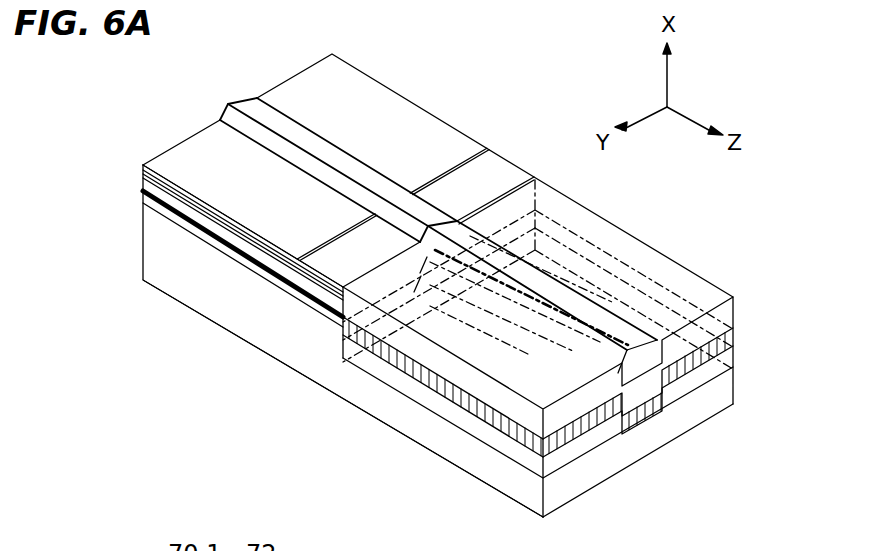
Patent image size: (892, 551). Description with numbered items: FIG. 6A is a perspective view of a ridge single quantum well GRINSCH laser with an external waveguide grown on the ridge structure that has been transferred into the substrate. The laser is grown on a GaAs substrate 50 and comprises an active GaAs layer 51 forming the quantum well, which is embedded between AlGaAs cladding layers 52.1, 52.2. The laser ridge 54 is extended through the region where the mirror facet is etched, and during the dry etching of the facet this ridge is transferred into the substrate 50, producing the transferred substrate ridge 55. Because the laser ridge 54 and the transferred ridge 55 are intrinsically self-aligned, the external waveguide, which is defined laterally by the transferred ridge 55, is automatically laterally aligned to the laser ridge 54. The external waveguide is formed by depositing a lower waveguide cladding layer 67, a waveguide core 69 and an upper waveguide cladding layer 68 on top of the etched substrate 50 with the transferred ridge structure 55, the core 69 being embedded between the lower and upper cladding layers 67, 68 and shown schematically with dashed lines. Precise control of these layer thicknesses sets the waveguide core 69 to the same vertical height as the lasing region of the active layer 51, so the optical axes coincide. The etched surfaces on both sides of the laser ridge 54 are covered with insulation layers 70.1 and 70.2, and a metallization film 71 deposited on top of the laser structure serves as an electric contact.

The GaAs substrate 50 is at (158, 255).
The active GaAs layer 51 is at (144, 190).
The cladding layer 52.1 is at (153, 203).
The cladding layer 52.2 is at (144, 184).
The laser ridge 54 is at (246, 101).
The transferred substrate ridge 55 is at (641, 420).
The lower waveguide cladding layer 67 is at (577, 447).
The upper waveguide cladding layer 68 is at (702, 282).
The waveguide core 69 is at (481, 422).
The insulation layer 70.1 is at (527, 173).
The insulation layer 70.2 is at (325, 272).
The metallization film 71 is at (454, 140).